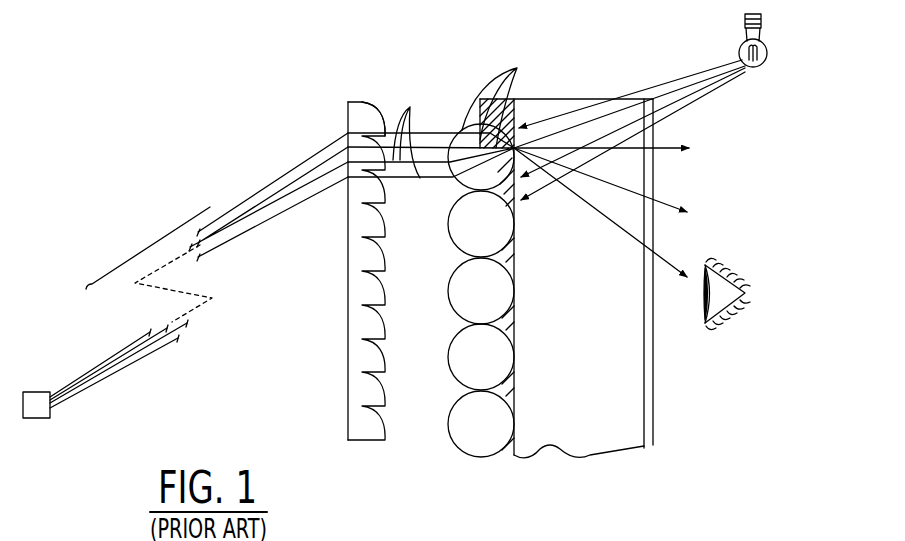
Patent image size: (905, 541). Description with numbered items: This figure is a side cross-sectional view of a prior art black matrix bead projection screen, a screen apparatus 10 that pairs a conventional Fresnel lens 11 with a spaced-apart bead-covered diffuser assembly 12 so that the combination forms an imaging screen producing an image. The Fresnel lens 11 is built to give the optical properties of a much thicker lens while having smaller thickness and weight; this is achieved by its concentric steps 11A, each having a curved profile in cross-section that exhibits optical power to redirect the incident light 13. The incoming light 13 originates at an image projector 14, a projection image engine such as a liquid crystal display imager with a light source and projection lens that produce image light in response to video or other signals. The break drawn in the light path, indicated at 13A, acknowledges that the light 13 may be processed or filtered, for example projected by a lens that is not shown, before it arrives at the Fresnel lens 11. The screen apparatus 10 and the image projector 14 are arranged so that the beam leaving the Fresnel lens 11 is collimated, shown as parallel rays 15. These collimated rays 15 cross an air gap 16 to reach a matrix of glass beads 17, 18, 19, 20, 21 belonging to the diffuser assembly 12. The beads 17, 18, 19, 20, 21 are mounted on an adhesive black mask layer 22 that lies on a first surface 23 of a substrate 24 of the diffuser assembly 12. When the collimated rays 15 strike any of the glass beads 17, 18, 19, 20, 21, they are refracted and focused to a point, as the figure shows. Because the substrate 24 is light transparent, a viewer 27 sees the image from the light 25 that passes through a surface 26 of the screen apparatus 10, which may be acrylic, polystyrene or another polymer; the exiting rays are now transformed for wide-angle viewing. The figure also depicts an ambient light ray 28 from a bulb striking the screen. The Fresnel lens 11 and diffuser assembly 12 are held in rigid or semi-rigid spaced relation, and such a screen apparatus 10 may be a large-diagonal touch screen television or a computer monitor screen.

The screen apparatus 10 is at (469, 38).
The Fresnel lens 11 is at (387, 444).
The concentric steps 11A is at (381, 104).
The diffuser assembly 12 is at (557, 460).
The incoming light 13 is at (299, 160).
The break in the light path 13A is at (154, 241).
The image projector 14 is at (44, 419).
The collimated rays of light 15 is at (415, 134).
The air gap 16 is at (431, 472).
The glass bead 17 is at (462, 190).
The glass bead 18 is at (457, 243).
The glass bead 19 is at (457, 310).
The glass bead 20 is at (457, 376).
The glass bead 21 is at (457, 443).
The adhesive black mask layer 22 is at (512, 108).
The first surface 23 is at (511, 456).
The substrate 24 is at (612, 106).
The light 25 is at (509, 74).
The surface 26 is at (656, 366).
The viewer 27 is at (706, 261).
The ambient light ray 28 is at (672, 79).